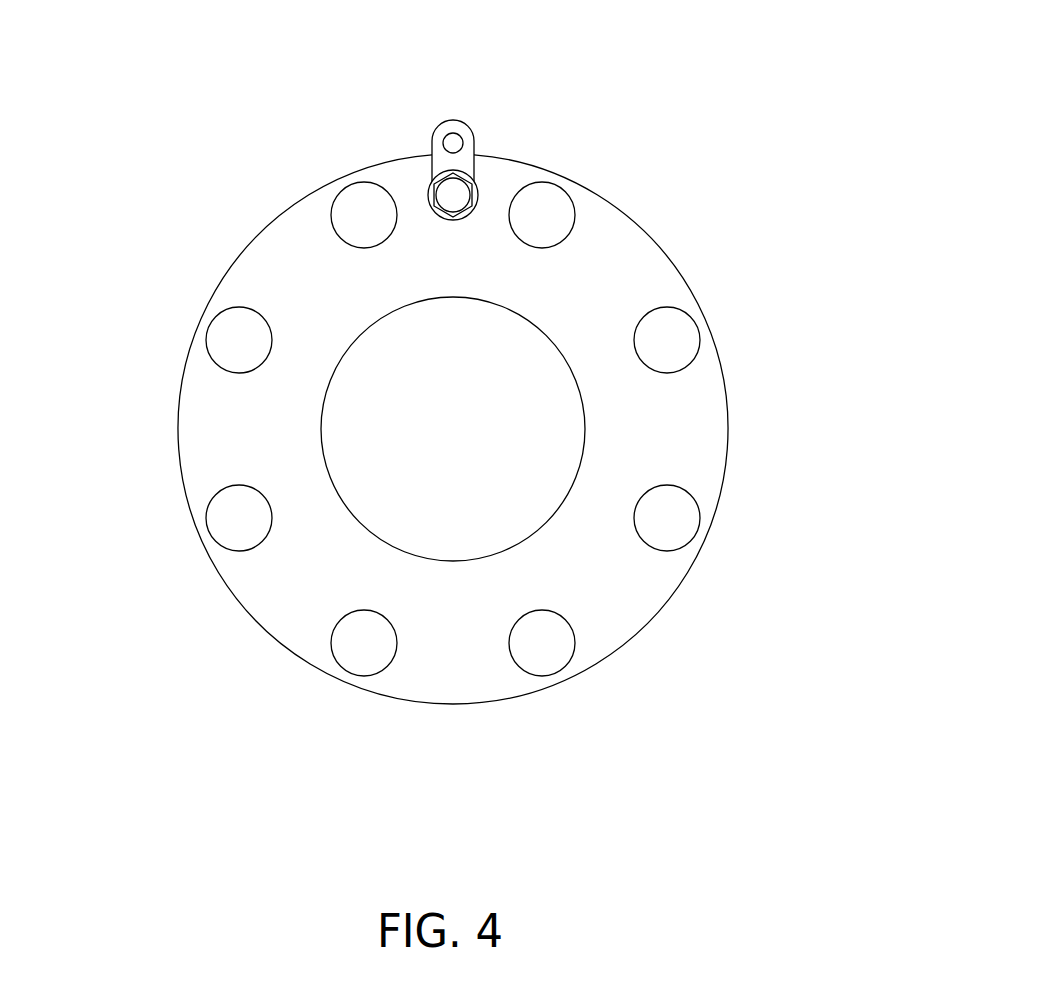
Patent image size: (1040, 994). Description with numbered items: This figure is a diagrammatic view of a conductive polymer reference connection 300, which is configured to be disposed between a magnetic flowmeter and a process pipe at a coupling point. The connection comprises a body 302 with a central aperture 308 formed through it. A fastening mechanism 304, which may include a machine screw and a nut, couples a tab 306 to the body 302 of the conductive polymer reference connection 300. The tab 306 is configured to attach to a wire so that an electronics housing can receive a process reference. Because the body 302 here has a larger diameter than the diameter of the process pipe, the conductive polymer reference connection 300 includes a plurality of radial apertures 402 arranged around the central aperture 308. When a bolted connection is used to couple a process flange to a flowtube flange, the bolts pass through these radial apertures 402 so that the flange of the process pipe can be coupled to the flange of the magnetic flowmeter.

The conductive polymer reference connection 300 is at (902, 197).
The body 302 is at (312, 569).
The fastening mechanism 304 is at (453, 193).
The tab 306 is at (453, 120).
The central aperture 308 is at (423, 377).
The radial apertures 402 is at (665, 518).